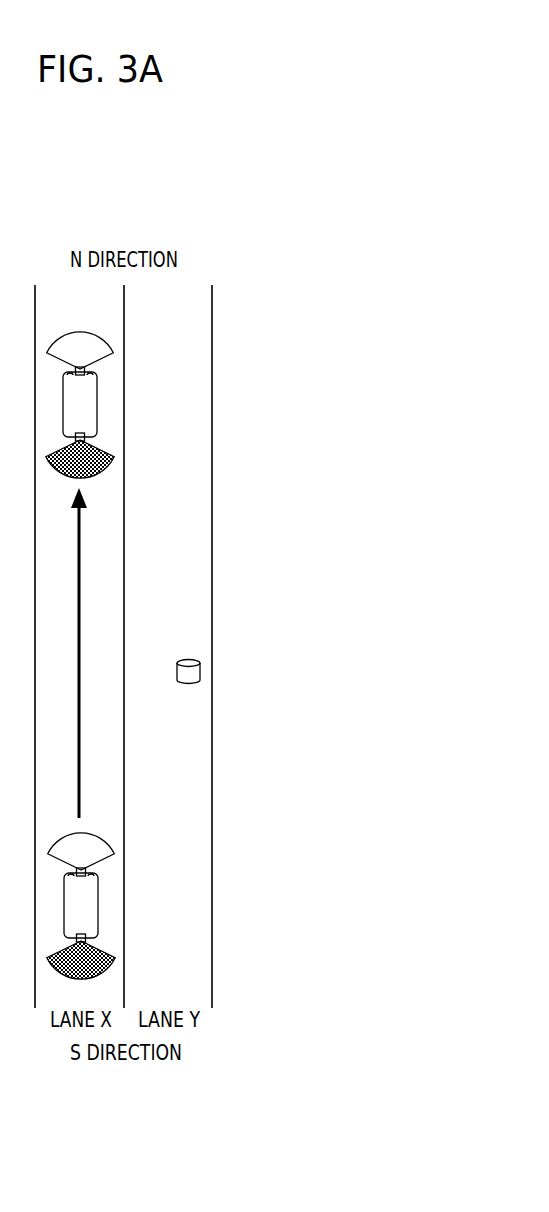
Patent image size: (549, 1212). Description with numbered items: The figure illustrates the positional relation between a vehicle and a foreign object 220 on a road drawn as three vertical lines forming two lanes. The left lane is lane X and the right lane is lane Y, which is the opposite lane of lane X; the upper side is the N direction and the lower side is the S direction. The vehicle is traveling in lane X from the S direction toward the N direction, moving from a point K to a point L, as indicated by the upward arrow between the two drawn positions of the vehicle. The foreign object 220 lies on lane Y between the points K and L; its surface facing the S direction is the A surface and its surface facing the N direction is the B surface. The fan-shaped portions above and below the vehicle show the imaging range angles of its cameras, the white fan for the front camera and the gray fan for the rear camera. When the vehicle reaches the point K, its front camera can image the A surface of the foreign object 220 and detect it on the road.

The foreign object 220 is at (200, 670).
The point L is at (21, 409).
The point K is at (20, 905).
The A surface A is at (187, 715).
The B surface B is at (187, 633).